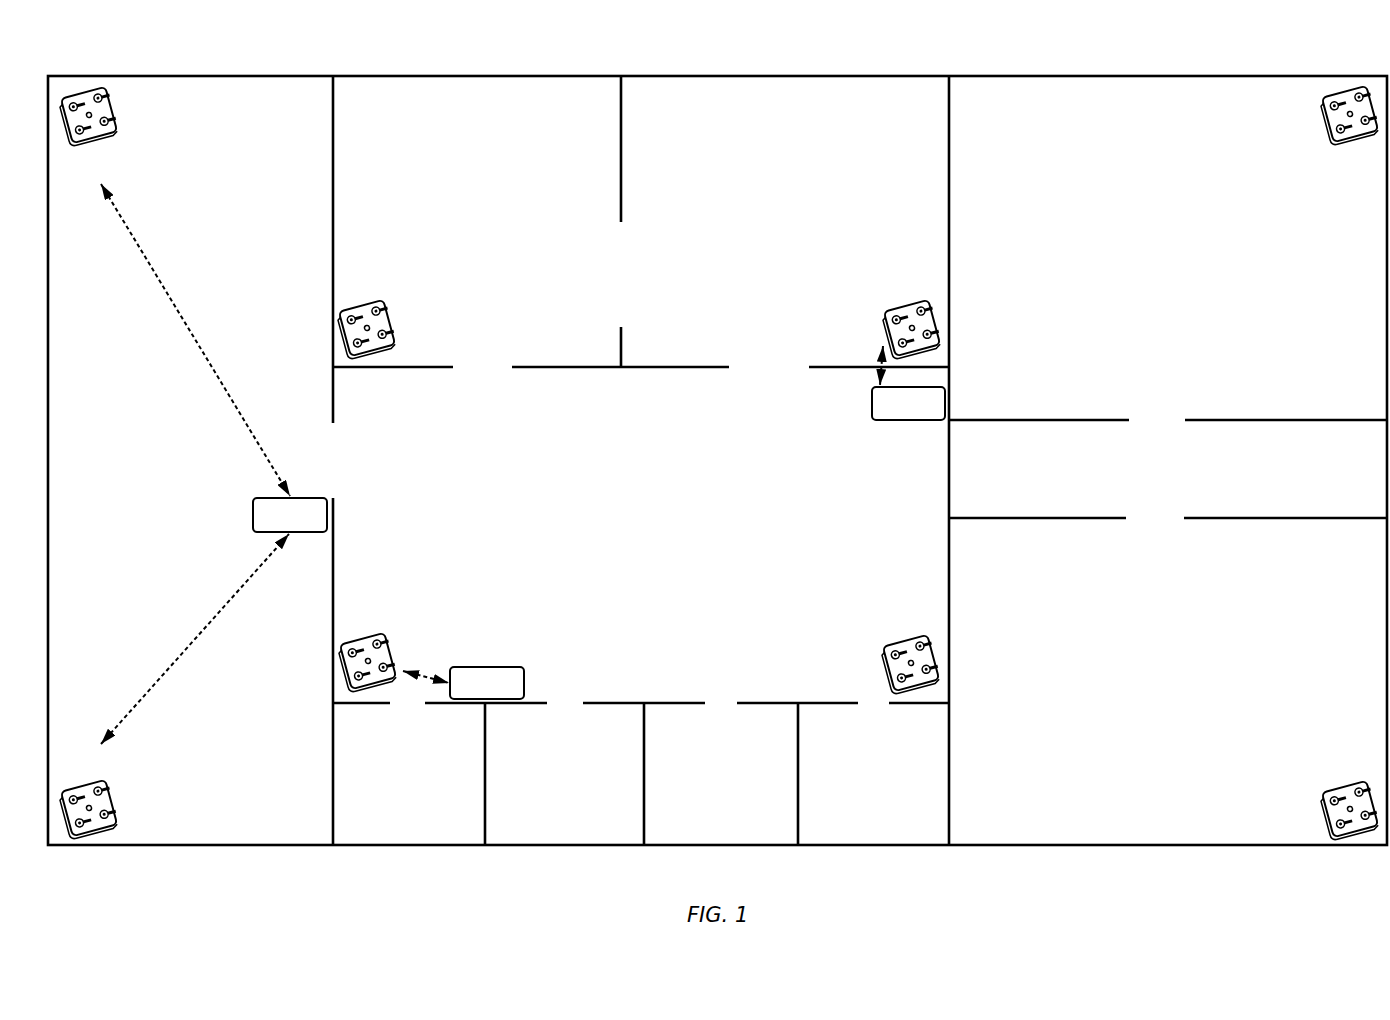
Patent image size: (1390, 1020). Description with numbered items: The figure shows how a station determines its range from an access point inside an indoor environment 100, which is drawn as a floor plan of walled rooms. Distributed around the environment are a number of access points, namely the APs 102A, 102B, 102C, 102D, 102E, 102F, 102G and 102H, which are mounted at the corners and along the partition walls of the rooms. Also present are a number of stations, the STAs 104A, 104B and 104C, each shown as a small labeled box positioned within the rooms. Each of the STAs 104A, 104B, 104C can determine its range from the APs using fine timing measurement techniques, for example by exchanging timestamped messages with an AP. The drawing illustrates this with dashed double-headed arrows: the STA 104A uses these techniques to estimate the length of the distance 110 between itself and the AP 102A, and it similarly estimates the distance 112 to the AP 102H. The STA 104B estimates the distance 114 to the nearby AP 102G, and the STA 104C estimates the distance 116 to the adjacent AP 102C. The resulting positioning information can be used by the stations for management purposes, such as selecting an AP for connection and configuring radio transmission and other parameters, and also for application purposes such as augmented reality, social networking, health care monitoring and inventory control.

The indoor environment 100 is at (1025, 44).
The AP 102A is at (88, 133).
The AP 102B is at (367, 316).
The AP 102C is at (912, 316).
The AP 102D is at (1350, 131).
The AP 102E is at (1350, 796).
The AP 102F is at (911, 650).
The AP 102G is at (368, 648).
The AP 102H is at (89, 795).
The STA 104A is at (290, 515).
The STA 104B is at (487, 683).
The STA 104C is at (908, 403).
The distance 110 is at (168, 287).
The distance 112 is at (171, 676).
The distance 114 is at (429, 671).
The distance 116 is at (875, 359).